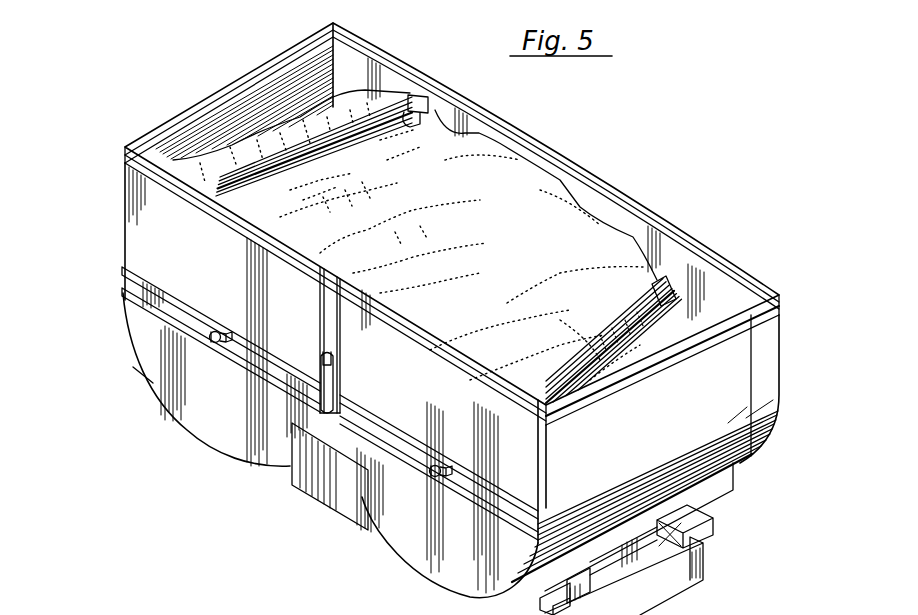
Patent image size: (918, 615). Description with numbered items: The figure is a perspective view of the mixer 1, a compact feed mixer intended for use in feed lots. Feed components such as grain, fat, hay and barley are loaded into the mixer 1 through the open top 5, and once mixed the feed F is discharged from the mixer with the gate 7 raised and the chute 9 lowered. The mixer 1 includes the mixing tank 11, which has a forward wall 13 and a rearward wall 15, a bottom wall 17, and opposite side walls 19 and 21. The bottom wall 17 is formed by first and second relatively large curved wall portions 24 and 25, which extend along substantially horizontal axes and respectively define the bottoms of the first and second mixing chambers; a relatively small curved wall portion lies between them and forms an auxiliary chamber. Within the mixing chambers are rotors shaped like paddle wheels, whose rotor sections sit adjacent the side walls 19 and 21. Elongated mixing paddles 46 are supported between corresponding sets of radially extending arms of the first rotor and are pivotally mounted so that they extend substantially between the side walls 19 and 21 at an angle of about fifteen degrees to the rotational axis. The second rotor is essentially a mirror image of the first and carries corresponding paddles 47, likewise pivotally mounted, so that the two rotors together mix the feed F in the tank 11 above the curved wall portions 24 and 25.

The mixer 1 is at (727, 102).
The open top 5 is at (506, 228).
The gate 7 is at (329, 450).
The chute 9 is at (344, 487).
The mixing tank 11 is at (690, 234).
The forward wall 13 is at (184, 106).
The rearward wall 15 is at (626, 448).
The bottom wall 17 is at (172, 429).
The side wall 19 is at (307, 318).
The side wall 21 is at (407, 63).
The first curved wall portion 24 is at (217, 452).
The second curved wall portion 25 is at (421, 567).
The mixing paddles 46 is at (290, 122).
The paddles 47 is at (618, 312).
The feed F is at (566, 257).